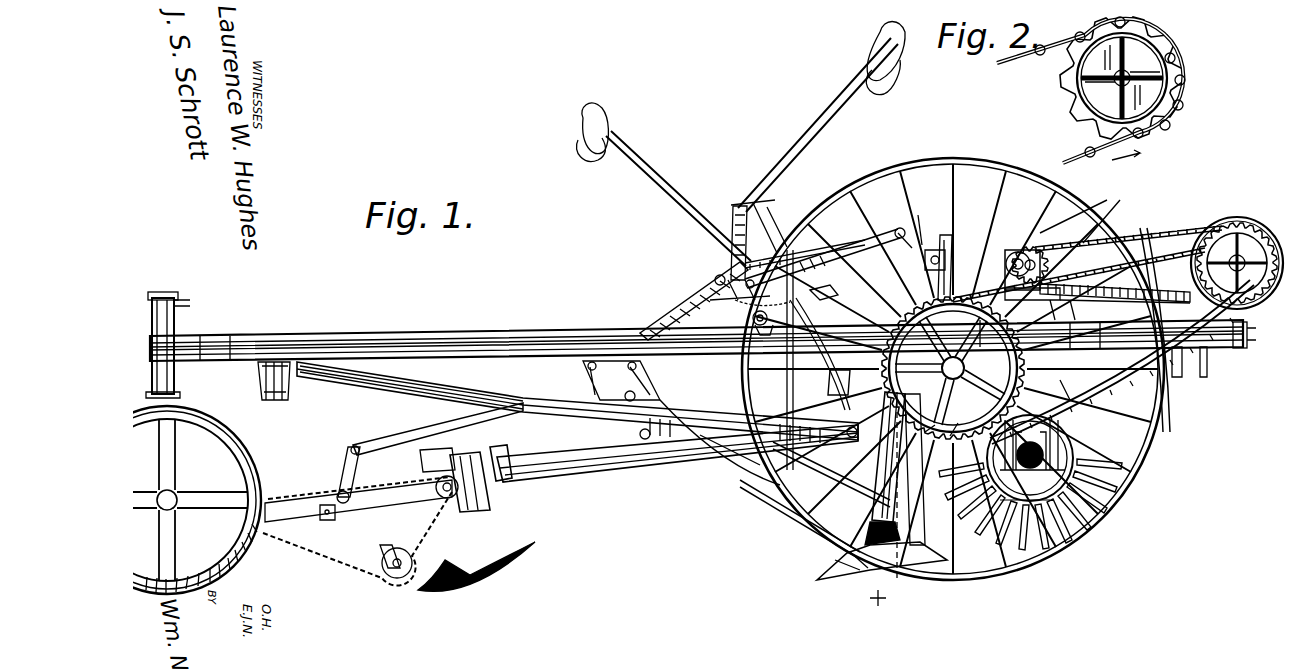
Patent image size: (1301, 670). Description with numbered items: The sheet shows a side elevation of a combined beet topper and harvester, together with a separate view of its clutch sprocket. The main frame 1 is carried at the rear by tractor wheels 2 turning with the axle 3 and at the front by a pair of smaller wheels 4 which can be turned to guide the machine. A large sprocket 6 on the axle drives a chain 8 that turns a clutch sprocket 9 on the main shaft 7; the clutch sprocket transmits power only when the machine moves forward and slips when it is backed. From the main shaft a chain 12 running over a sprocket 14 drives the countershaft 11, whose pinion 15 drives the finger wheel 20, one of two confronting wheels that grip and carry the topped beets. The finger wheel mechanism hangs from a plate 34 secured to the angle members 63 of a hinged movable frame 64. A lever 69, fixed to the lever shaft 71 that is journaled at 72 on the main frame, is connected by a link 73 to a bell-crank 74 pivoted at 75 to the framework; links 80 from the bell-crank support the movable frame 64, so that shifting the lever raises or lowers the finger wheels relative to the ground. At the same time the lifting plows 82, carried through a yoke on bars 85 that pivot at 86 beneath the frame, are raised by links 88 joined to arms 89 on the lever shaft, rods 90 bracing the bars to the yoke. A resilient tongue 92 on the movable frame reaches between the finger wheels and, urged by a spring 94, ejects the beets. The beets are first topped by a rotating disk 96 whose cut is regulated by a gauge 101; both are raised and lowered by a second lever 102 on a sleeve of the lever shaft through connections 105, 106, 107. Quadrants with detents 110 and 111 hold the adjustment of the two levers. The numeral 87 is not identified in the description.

In FIG. 1, the main frame 1 is at (516, 334).
In FIG. 1, the tractor wheels 2 is at (800, 527).
In FIG. 1, the axle 3 is at (795, 497).
In FIG. 1, the smaller wheels 4 is at (248, 460).
In FIG. 1, the large sprocket 6 is at (886, 370).
In FIG. 1, the main shaft 7 is at (1244, 250).
In FIG. 2, the main shaft 7 is at (1160, 70).
In FIG. 1, the chain 8 is at (1160, 378).
In FIG. 1, the clutch sprocket 9 is at (1262, 318).
In FIG. 2, the clutch sprocket 9 is at (1160, 97).
In FIG. 1, the countershaft 11 is at (1020, 248).
In FIG. 1, the chain 12 is at (1178, 236).
In FIG. 1, the sprocket 14 is at (1232, 226).
In FIG. 1, the pinion 15 is at (1120, 462).
In FIG. 1, the finger wheel 20 is at (1100, 496).
In FIG. 1, the plate 34 is at (1048, 528).
In FIG. 1, the angle members 63 is at (1165, 395).
In FIG. 1, the movable frame 64 is at (1134, 250).
In FIG. 1, the lever 69 is at (634, 162).
In FIG. 1, the lever shaft 71 is at (814, 354).
In FIG. 1, the journal 72 is at (795, 348).
In FIG. 1, the link 73 is at (828, 254).
In FIG. 1, the bell-crank 74 is at (918, 222).
In FIG. 1, the pivot 75 is at (932, 248).
In FIG. 1, the links 80 is at (995, 262).
In FIG. 1, the lifting plows 82 is at (832, 580).
In FIG. 1, the bars 85 is at (700, 435).
In FIG. 1, the pivotal mounting 86 is at (272, 360).
In FIG. 1, the bracket plate 87 is at (262, 392).
In FIG. 1, the links 88 is at (830, 402).
In FIG. 1, the arms 89 is at (820, 285).
In FIG. 1, the rods 90 is at (765, 470).
In FIG. 1, the tongue 92 is at (1140, 440).
In FIG. 1, the spring 94 is at (1100, 240).
In FIG. 1, the disk 96 is at (462, 588).
In FIG. 1, the gauge 101 is at (396, 588).
In FIG. 1, the lever 102 is at (825, 128).
In FIG. 1, the connection 105 is at (668, 316).
In FIG. 1, the connection 106 is at (586, 364).
In FIG. 1, the connection 107 is at (396, 442).
In FIG. 1, the detent 110 is at (712, 280).
In FIG. 1, the detent 111 is at (785, 245).